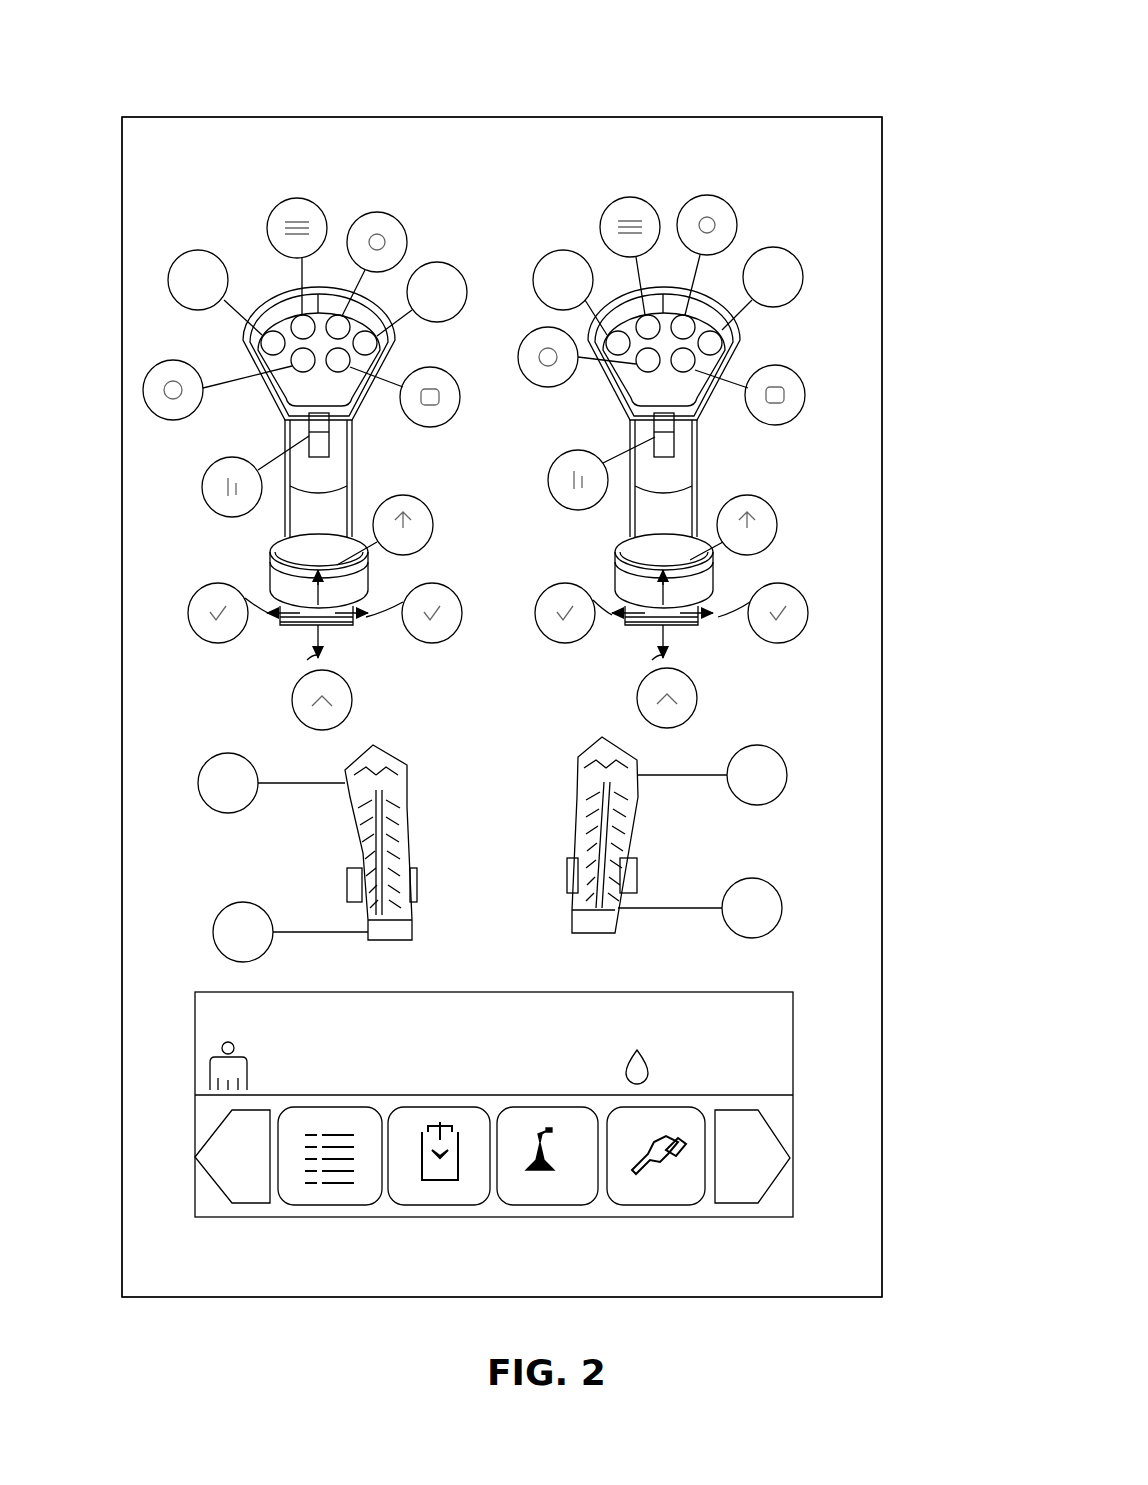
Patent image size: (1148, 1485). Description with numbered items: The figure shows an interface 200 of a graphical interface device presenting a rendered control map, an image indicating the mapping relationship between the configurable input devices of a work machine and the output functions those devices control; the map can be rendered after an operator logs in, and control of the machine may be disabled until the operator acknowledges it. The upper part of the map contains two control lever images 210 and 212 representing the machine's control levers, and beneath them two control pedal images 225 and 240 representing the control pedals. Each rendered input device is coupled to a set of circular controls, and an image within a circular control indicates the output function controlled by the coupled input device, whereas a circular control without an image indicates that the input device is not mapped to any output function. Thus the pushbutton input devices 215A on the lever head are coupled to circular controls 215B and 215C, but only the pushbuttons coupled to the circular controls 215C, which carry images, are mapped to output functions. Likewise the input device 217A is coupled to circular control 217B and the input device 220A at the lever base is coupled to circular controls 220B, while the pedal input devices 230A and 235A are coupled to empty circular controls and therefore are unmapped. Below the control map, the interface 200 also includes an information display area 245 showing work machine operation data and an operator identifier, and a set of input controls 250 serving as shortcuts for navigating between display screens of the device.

The interface 200 is at (790, 71).
The control lever image 210 is at (270, 281).
The control lever image 212 is at (757, 337).
The pushbutton input devices 215A is at (311, 384).
The circular controls 215B is at (185, 255).
The circular controls 215C is at (330, 178).
The input device 217A is at (331, 445).
The circular control 217B is at (208, 500).
The input device 220A is at (300, 594).
The circular controls 220B is at (425, 552).
The control pedal image 225 is at (402, 740).
The input device 230A is at (205, 765).
The input device 235A is at (222, 910).
The control pedal image 240 is at (586, 735).
The information display area 245 is at (755, 978).
The set of input controls 250 is at (632, 1225).